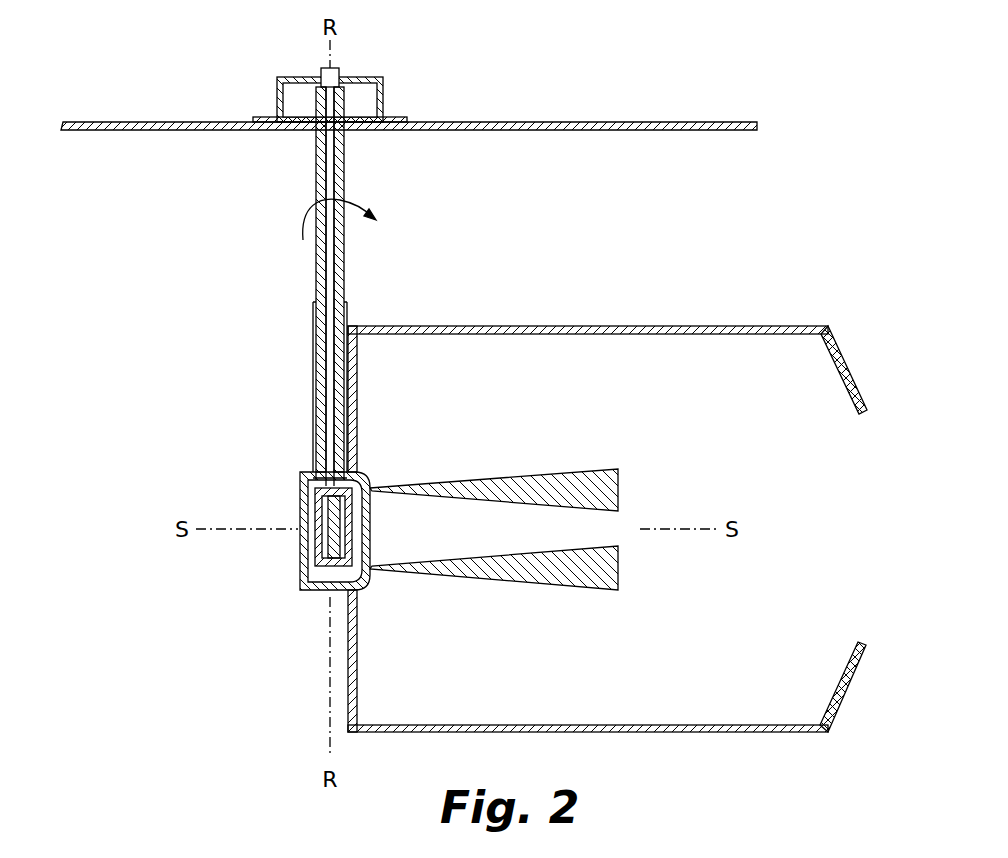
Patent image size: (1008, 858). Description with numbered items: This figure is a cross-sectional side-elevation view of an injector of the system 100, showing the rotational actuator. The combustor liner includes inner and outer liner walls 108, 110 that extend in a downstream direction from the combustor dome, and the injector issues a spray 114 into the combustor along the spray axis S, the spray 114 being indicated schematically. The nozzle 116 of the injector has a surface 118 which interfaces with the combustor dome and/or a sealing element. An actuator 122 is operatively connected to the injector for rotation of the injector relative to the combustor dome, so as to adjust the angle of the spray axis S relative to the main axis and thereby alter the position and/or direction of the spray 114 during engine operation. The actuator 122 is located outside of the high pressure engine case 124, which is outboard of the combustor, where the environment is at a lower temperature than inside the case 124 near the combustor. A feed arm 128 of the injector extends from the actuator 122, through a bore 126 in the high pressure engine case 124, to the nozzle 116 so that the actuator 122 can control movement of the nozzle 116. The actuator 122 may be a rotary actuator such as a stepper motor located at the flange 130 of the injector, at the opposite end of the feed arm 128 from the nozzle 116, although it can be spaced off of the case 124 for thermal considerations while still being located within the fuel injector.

The system 100 is at (508, 95).
The inner liner wall 108 is at (752, 725).
The outer liner wall 110 is at (760, 326).
The spray 114 is at (583, 476).
The nozzle 116 is at (382, 462).
The surface 118 is at (332, 592).
The actuator 122 is at (372, 86).
The high pressure engine case 124 is at (697, 122).
The bore 126 is at (362, 143).
The feed arm 128 is at (344, 296).
The flange 130 is at (257, 117).